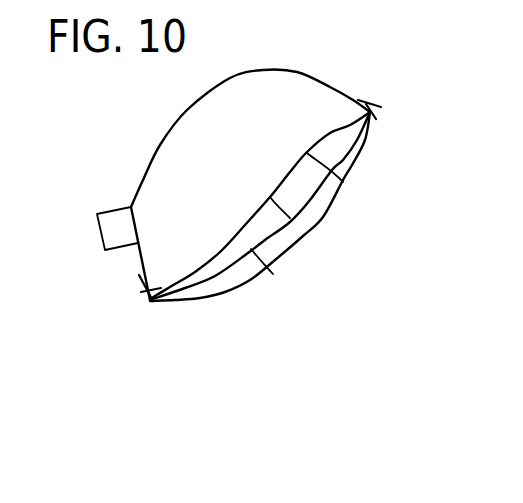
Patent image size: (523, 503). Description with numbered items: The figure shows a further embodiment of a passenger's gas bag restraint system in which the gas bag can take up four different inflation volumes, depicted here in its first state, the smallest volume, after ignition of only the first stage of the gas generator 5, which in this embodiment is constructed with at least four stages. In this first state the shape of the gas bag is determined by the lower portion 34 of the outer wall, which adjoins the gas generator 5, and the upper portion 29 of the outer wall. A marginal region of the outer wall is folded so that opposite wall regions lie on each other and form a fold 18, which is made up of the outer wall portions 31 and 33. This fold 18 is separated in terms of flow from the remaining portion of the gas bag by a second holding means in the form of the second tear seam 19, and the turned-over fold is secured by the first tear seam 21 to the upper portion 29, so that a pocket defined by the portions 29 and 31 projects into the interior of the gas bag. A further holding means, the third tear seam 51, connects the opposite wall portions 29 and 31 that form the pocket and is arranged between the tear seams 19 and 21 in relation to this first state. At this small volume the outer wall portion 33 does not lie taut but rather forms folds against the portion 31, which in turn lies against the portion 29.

The lower portion of the outer wall 34 is at (263, 70).
The second tear seam 19 is at (374, 116).
The upper portion of the outer wall 29 is at (343, 182).
The portion of the outer wall 33 is at (322, 218).
The portion of the outer wall 31 is at (273, 274).
The third tear seam 51 is at (270, 197).
The fold 18 is at (238, 287).
The gas generator 5 is at (107, 237).
The first tear seam 21 is at (167, 306).